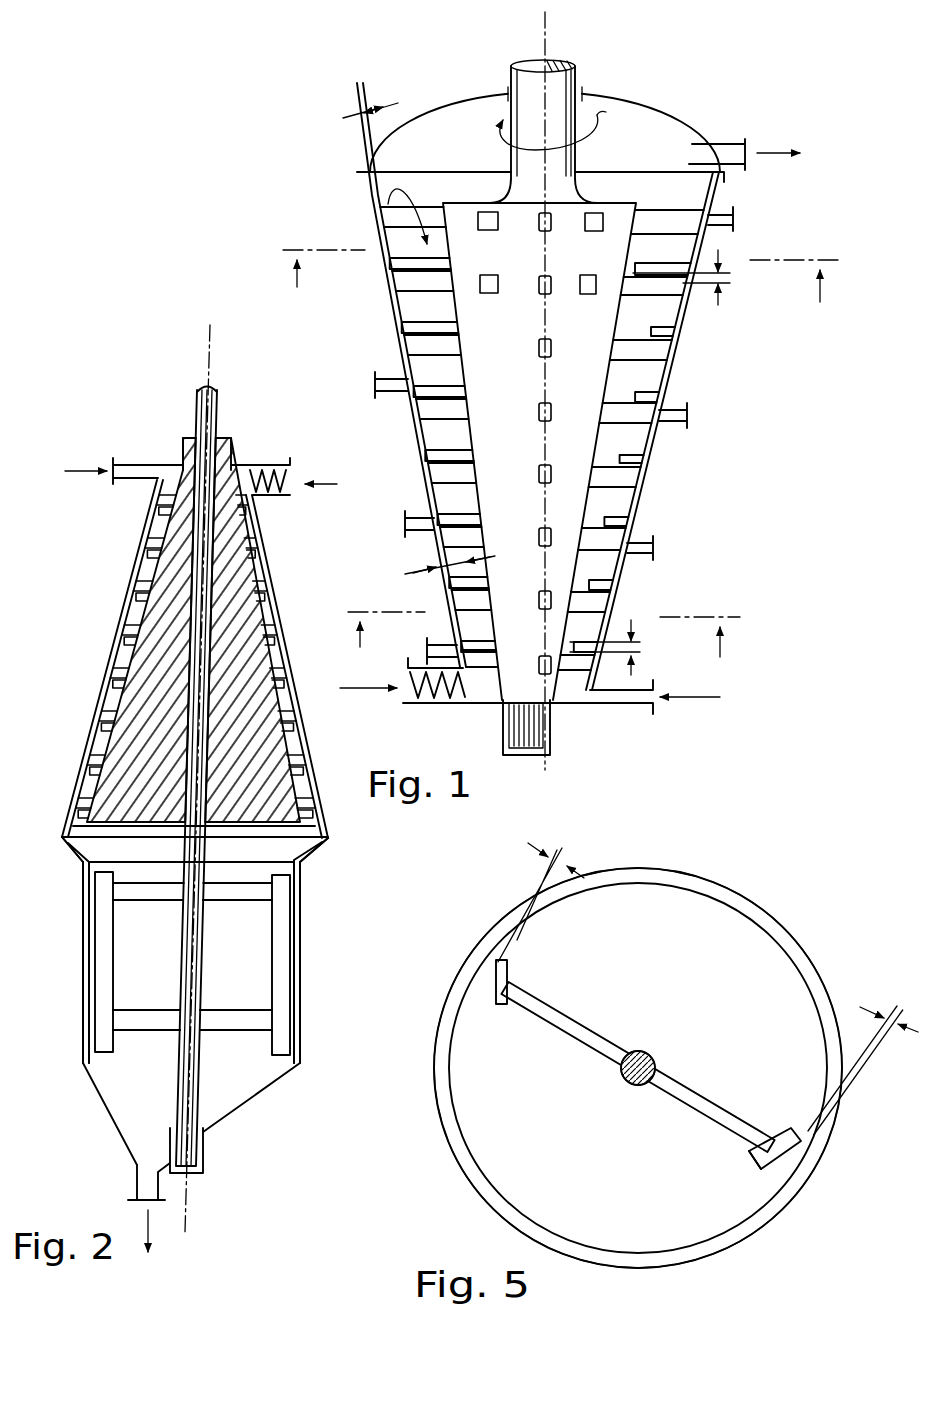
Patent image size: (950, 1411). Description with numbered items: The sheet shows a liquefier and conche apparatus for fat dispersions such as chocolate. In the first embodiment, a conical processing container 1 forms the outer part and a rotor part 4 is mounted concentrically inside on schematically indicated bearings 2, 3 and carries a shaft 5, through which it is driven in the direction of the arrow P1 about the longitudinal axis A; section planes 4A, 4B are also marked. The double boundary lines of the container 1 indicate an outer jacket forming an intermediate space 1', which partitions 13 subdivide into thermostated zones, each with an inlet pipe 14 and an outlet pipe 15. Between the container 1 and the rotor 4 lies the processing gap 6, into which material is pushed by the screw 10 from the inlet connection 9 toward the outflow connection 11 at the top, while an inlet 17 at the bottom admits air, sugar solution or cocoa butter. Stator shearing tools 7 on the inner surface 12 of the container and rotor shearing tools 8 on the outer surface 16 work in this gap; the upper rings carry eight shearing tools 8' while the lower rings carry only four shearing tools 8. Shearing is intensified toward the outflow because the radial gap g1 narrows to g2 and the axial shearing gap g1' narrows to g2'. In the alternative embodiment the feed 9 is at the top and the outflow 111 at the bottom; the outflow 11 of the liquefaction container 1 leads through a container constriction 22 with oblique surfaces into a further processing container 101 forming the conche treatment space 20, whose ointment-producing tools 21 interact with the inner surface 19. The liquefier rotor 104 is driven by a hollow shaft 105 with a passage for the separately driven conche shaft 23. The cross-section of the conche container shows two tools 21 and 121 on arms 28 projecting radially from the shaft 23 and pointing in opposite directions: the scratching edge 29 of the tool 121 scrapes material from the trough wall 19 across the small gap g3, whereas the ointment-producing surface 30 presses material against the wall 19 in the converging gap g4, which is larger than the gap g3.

In FIG. 1, the processing container 1 is at (540, 127).
In FIG. 2, the processing container 1 is at (173, 925).
In FIG. 1, the intermediate space 1' is at (526, 386).
In FIG. 2, the intermediate space 1' is at (191, 659).
In FIG. 1, the bearing 2 is at (592, 94).
In FIG. 2, the bearing 2 is at (229, 436).
In FIG. 1, the bearing 3 is at (550, 728).
In FIG. 2, the bearing 3 is at (205, 1168).
In FIG. 1, the rotor part 4 is at (574, 365).
In FIG. 1, the shaft 5 is at (511, 70).
In FIG. 1, the processing gap 6 is at (377, 184).
In FIG. 2, the processing gap 6 is at (97, 747).
In FIG. 1, the shearing tools of the container 7 is at (427, 386).
In FIG. 1, the shearing tools of the rotor 8 is at (437, 437).
In FIG. 1, the shearing tools 8' is at (564, 214).
In FIG. 1, the inlet connection 9 is at (438, 705).
In FIG. 2, the inlet connection 9 is at (258, 484).
In FIG. 1, the screw 10 is at (408, 704).
In FIG. 2, the screw 10 is at (295, 497).
In FIG. 1, the outflow connection 11 is at (733, 143).
In FIG. 2, the outflow connection 11 is at (112, 850).
In FIG. 1, the inner surface of the container 12 is at (450, 489).
In FIG. 1, the partitions 13 is at (662, 397).
In FIG. 1, the inlet pipe 14 is at (376, 381).
In FIG. 1, the outlet pipe 15 is at (735, 218).
In FIG. 1, the outer surface of the rotor 16 is at (611, 432).
In FIG. 1, the inlet 17 is at (655, 712).
In FIG. 2, the inlet 17 is at (130, 484).
In FIG. 2, the inner surface of the container 19 is at (275, 1062).
In FIG. 5, the inner surface of the container 19 is at (652, 1261).
In FIG. 2, the conche treatment space 20 is at (236, 961).
In FIG. 5, the conche treatment space 20 is at (722, 943).
In FIG. 2, the ointment-producing tools 21 is at (282, 996).
In FIG. 5, the ointment-producing tools 21 is at (774, 1153).
In FIG. 2, the container constriction 22 is at (311, 856).
In FIG. 2, the shaft 23 is at (196, 406).
In FIG. 5, the shaft 23 is at (640, 1052).
In FIG. 2, the arms 28 is at (146, 942).
In FIG. 5, the arms 28 is at (563, 1047).
In FIG. 5, the scratching edge 29 is at (494, 975).
In FIG. 5, the ointment-producing surface 30 is at (759, 1169).
In FIG. 2, the further processing container 101 is at (83, 967).
In FIG. 2, the rotor 104 is at (157, 791).
In FIG. 2, the shaft 105 is at (180, 450).
In FIG. 2, the outflow 111 is at (133, 1190).
In FIG. 5, the tool 121 is at (501, 970).
In FIG. 1, the longitudinal axis A is at (549, 33).
In FIG. 2, the longitudinal axis A is at (188, 1221).
In FIG. 1, the arrow P1 is at (595, 128).
In FIG. 1, the section line 4A is at (562, 284).
In FIG. 1, the section line 4B is at (552, 643).
In FIG. 1, the radial gap g1 is at (437, 573).
In FIG. 1, the axial shearing gap g1' is at (622, 647).
In FIG. 1, the radial gap g2 is at (352, 99).
In FIG. 1, the axial shearing gap g2' is at (692, 281).
In FIG. 5, the gap g3 is at (558, 852).
In FIG. 5, the gap g4 is at (863, 1056).